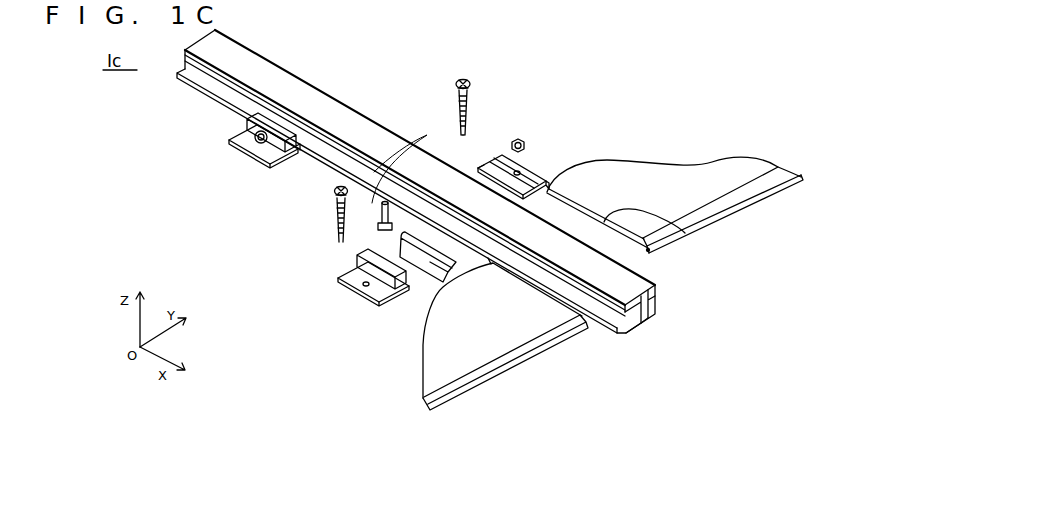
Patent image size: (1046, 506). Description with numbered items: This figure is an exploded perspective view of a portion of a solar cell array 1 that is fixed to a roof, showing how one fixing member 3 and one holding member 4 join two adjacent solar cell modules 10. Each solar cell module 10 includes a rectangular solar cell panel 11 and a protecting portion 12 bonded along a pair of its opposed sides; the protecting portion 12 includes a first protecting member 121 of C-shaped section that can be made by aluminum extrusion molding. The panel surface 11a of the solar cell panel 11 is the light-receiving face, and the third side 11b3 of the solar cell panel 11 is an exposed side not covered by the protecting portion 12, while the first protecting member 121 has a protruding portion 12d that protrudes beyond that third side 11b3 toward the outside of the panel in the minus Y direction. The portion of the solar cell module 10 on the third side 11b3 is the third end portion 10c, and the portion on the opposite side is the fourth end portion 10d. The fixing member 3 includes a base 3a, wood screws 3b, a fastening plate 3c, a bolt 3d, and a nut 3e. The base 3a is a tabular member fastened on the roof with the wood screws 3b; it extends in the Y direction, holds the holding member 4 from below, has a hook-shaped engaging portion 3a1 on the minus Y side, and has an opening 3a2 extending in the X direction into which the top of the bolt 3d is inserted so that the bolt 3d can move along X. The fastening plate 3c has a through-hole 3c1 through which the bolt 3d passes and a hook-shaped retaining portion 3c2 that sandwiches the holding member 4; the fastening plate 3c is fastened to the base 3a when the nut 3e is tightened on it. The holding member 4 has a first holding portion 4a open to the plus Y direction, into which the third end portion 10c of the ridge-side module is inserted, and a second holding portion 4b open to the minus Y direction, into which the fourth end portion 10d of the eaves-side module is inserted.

The solar cell array 1 is at (241, 197).
The fixing member 3 is at (241, 143).
The base 3a is at (362, 297).
The engaging portion 3a1 is at (357, 254).
The opening 3a2 is at (490, 262).
The wood screws 3b is at (469, 84).
The fastening plate 3c is at (543, 192).
The through-hole 3c1 is at (518, 171).
The retaining portion 3c2 is at (481, 164).
The bolt 3d is at (377, 227).
The nut 3e is at (519, 140).
The holding member 4 is at (322, 97).
The first holding portion 4a is at (653, 308).
The second holding portion 4b is at (639, 335).
The solar cell module 10 is at (673, 160).
The third end portion 10c is at (684, 233).
The fourth end portion 10d is at (526, 292).
The solar cell panel 11 is at (615, 168).
The surface of solar cell panel 11a is at (686, 171).
The third side 11b3 is at (667, 223).
The protecting portion 12 is at (748, 191).
The first protecting member 121 is at (746, 214).
The protruding portion 12d is at (648, 252).